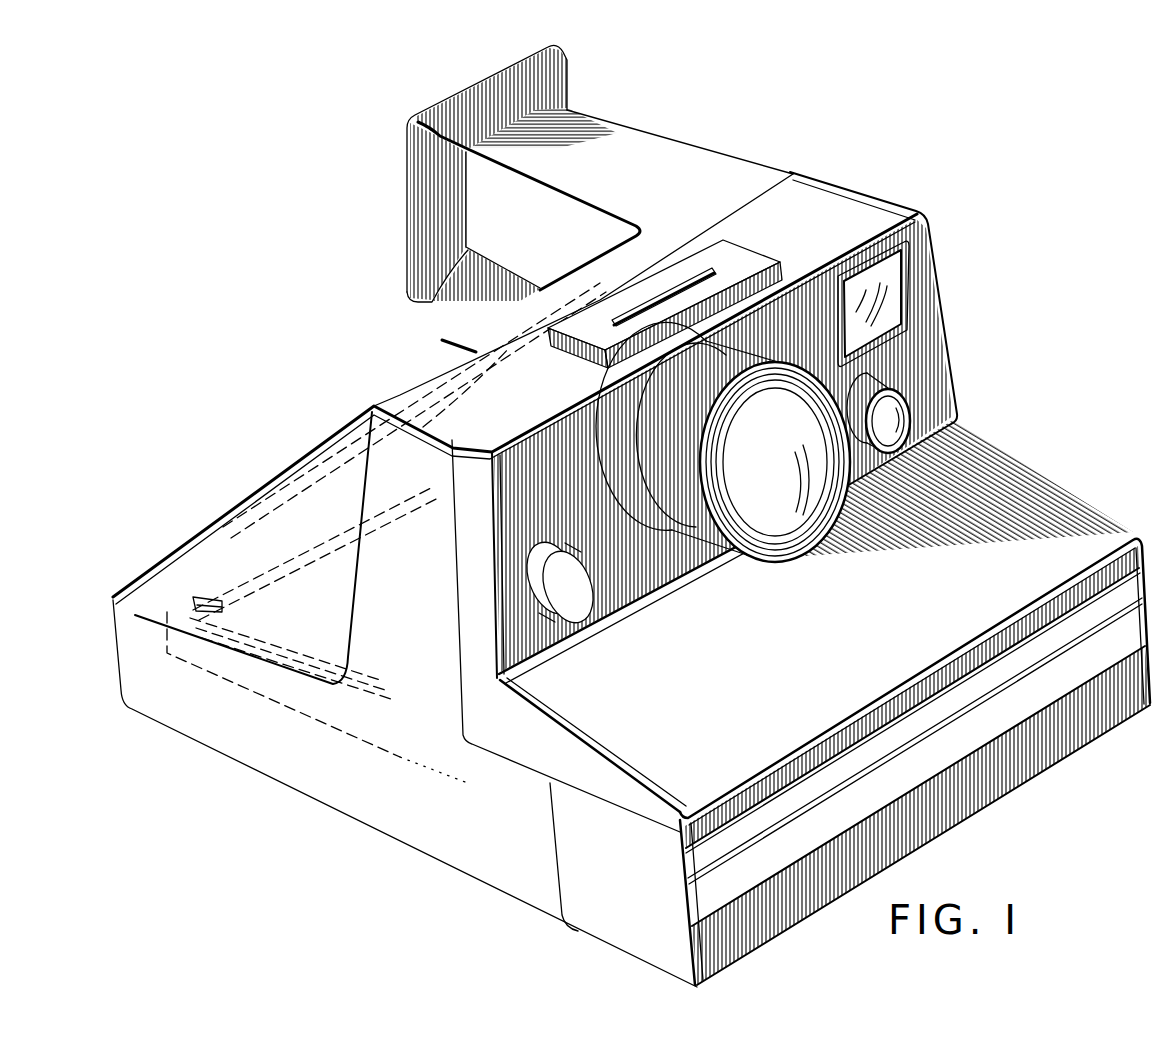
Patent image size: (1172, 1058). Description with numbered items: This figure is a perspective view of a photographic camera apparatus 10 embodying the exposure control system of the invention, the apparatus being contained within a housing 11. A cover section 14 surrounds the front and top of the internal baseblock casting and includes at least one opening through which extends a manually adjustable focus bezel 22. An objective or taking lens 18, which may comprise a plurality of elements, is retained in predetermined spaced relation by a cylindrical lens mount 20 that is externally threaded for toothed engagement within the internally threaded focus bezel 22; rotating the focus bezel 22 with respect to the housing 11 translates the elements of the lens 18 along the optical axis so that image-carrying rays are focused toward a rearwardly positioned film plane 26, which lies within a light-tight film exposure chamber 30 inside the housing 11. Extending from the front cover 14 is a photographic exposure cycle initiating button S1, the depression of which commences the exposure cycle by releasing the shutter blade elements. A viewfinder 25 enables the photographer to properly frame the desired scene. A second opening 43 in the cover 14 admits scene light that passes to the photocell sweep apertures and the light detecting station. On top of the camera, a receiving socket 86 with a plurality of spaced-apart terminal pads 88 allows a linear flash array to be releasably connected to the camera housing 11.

The photographic camera apparatus 10 is at (852, 172).
The housing 11 is at (948, 358).
The cover section 14 is at (1100, 513).
The objective lens 18 is at (748, 524).
The cylindrical lens mount 20 is at (775, 477).
The focus bezel 22 is at (523, 457).
The viewfinder 25 is at (897, 268).
The film plane 26 is at (312, 606).
The film exposure chamber 30 is at (280, 568).
The second opening 43 is at (900, 417).
The receiving socket 86 is at (665, 304).
The terminal pads 88 is at (636, 318).
The exposure cycle initiating button S1 is at (606, 618).